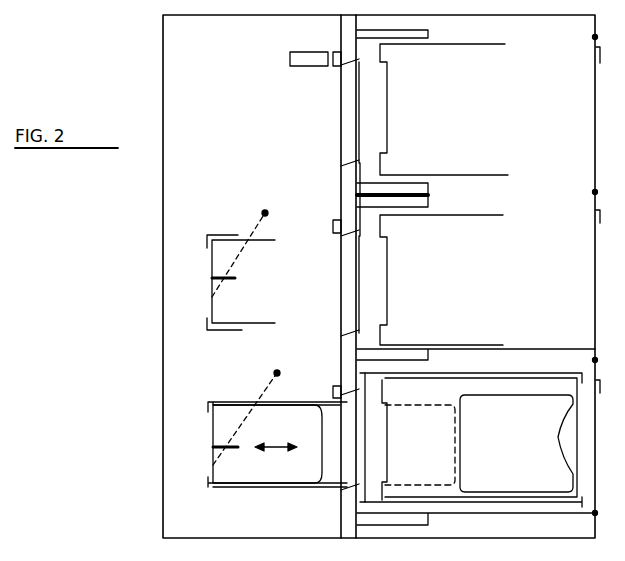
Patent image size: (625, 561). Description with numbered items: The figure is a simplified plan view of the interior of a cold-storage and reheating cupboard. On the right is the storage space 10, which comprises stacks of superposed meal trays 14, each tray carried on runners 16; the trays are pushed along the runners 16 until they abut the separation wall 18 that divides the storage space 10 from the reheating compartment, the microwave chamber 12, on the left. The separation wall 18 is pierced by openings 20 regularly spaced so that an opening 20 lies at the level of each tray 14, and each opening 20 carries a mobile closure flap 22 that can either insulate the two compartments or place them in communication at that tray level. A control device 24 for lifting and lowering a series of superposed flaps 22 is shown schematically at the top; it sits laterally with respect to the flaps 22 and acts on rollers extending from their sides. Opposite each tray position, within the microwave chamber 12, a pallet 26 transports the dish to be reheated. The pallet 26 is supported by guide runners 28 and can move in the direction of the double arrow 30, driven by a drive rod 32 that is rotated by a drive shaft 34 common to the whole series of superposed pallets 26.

The storage space 10 is at (538, 203).
The microwave chamber 12 is at (210, 175).
The meal trays 14 is at (463, 44).
The runners 16 is at (520, 374).
The separation wall 18 is at (330, 190).
The openings 20 is at (343, 235).
The closure flaps 22 is at (345, 109).
The control device 24 is at (307, 50).
The pallet 26 is at (283, 475).
The guide runners 28 is at (222, 401).
The double arrow 30 is at (272, 446).
The drive rod 32 is at (265, 398).
The drive shaft 34 is at (277, 373).